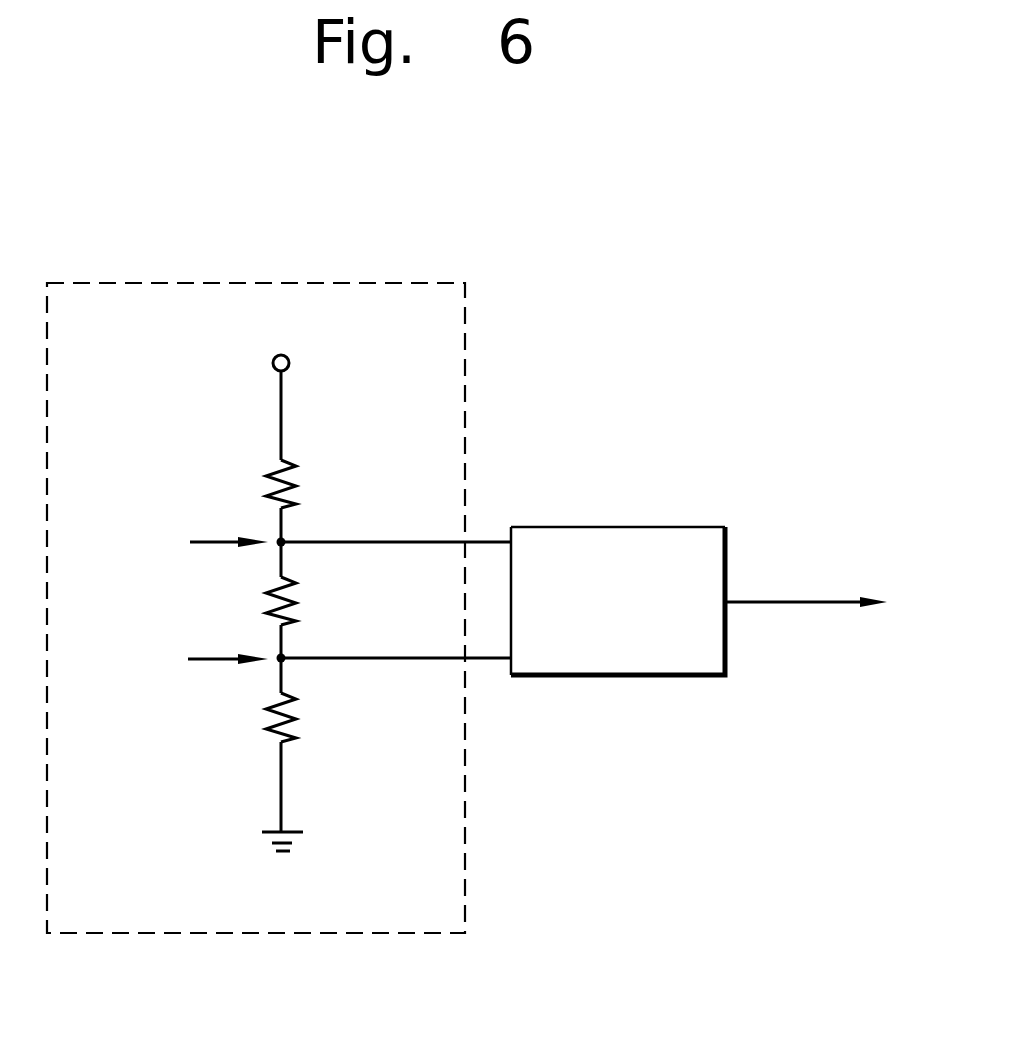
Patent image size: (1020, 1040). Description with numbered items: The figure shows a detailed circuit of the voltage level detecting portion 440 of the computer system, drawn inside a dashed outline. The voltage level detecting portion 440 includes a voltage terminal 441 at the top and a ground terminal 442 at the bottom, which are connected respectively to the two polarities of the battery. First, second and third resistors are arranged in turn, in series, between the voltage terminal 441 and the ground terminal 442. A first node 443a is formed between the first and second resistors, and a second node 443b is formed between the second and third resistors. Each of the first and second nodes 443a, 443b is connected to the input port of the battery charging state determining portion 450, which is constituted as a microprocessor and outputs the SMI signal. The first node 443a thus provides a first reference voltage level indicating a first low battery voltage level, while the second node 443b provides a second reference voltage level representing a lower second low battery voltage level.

The voltage level detecting portion 440 is at (327, 934).
The voltage terminal 441 is at (290, 362).
The ground terminal 442 is at (303, 832).
The first node 443a is at (284, 540).
The second node 443b is at (285, 662).
The battery charging state determining portion 450 is at (630, 675).